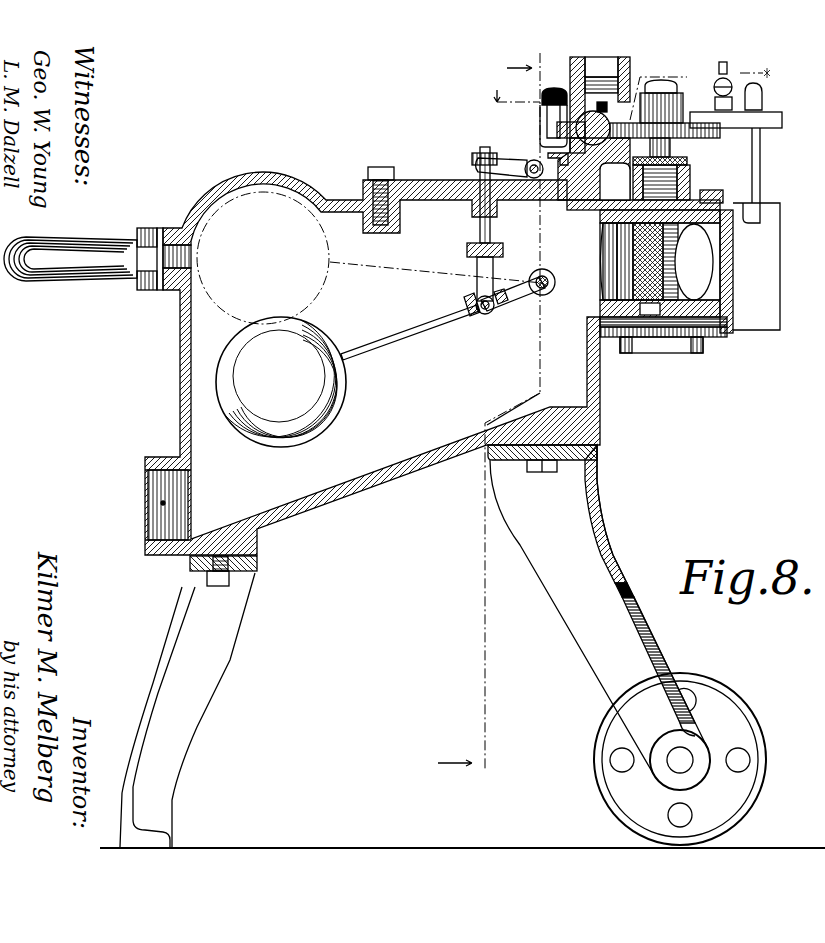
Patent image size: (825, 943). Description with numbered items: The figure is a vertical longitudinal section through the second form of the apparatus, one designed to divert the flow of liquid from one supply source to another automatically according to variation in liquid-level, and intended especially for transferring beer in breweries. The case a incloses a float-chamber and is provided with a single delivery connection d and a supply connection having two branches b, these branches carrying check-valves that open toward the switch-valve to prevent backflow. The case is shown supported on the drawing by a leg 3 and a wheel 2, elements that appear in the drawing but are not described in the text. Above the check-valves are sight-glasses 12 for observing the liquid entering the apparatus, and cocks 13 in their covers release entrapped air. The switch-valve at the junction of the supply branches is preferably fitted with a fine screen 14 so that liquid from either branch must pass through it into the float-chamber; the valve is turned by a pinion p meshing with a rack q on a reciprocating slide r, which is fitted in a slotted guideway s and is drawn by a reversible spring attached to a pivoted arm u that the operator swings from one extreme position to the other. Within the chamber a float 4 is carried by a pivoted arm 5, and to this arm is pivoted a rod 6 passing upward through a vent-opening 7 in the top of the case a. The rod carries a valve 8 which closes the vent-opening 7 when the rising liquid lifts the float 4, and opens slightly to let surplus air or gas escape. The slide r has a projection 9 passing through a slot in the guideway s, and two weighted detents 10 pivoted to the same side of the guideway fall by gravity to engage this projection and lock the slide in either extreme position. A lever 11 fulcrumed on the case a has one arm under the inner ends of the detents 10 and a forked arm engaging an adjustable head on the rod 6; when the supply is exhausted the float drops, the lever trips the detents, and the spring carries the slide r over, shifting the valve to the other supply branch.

The case a is at (350, 507).
The wheel 2 is at (717, 690).
The leg 3 is at (187, 710).
The float 4 is at (281, 382).
The pivoted arm 5 is at (406, 338).
The rod 6 is at (478, 227).
The vent-opening 7 is at (472, 175).
The valve 8 is at (495, 244).
The projection 9 is at (540, 112).
The detents 10 is at (497, 424).
The lever 11 is at (507, 157).
The sight-glasses 12 is at (778, 172).
The cocks 13 is at (716, 74).
The fine screen 14 is at (666, 273).
The supply connection branches b is at (753, 327).
The delivery connection d is at (170, 503).
The pinion p is at (705, 140).
The rack q is at (594, 169).
The slide r is at (588, 122).
The guideway s is at (554, 83).
The arm u is at (600, 105).